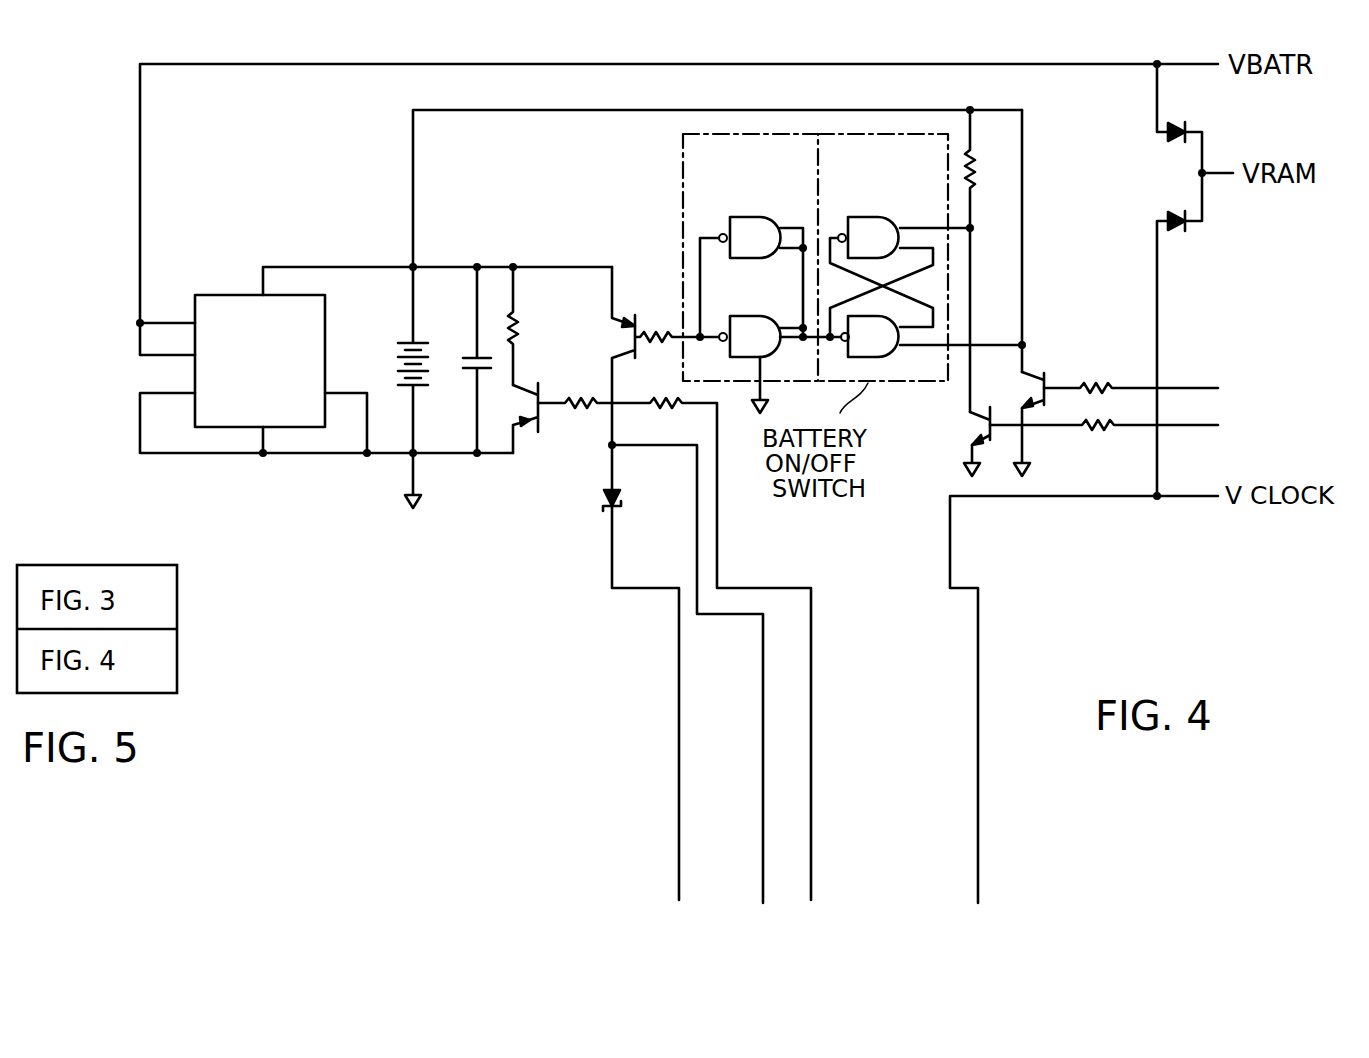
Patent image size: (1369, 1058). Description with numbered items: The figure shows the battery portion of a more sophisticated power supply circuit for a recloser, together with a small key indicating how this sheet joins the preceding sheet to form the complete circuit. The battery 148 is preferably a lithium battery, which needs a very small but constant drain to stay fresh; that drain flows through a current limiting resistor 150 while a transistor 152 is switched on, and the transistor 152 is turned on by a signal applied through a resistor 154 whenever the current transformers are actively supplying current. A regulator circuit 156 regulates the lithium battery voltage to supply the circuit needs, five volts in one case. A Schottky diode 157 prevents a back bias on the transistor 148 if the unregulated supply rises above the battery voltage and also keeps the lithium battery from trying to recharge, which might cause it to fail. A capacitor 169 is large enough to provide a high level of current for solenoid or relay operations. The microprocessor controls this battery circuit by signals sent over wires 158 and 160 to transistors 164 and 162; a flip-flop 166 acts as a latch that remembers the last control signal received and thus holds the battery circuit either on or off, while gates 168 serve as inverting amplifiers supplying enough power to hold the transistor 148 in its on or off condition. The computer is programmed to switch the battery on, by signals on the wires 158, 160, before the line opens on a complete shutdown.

The regulator circuit 156 is at (278, 325).
The battery 148 is at (400, 343).
The capacitor 169 is at (471, 357).
The current limiting resistor 150 is at (516, 330).
The transistor 152 is at (530, 406).
The resistor 154 is at (578, 408).
The Schottky diode 157 is at (606, 497).
The gates 168 is at (770, 197).
The flip-flop 166 is at (904, 197).
The transistor 164 is at (1033, 380).
The transistor 162 is at (975, 428).
The wire 158 is at (1186, 388).
The wire 160 is at (1178, 428).